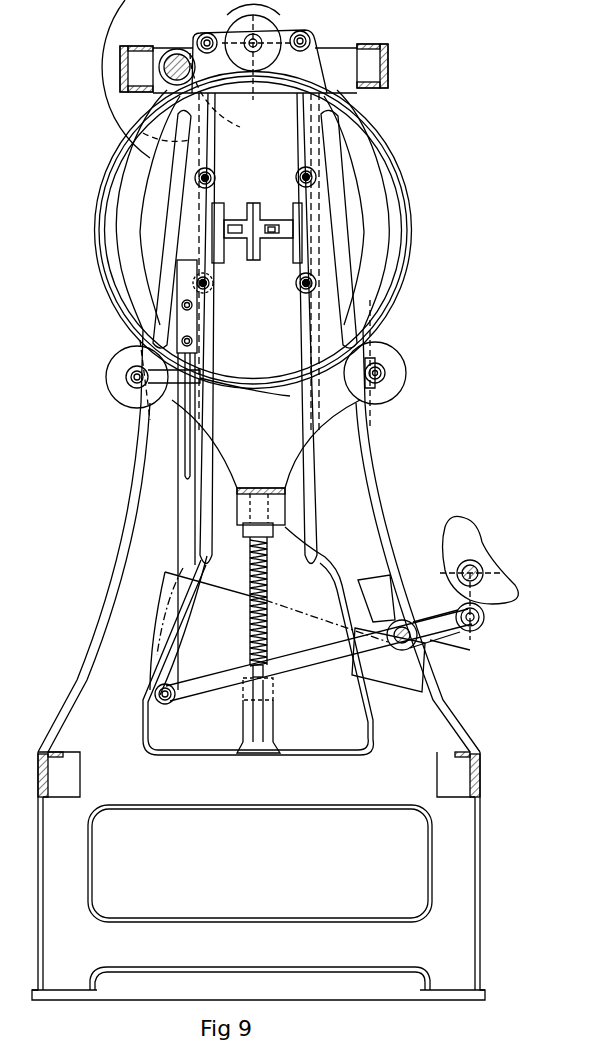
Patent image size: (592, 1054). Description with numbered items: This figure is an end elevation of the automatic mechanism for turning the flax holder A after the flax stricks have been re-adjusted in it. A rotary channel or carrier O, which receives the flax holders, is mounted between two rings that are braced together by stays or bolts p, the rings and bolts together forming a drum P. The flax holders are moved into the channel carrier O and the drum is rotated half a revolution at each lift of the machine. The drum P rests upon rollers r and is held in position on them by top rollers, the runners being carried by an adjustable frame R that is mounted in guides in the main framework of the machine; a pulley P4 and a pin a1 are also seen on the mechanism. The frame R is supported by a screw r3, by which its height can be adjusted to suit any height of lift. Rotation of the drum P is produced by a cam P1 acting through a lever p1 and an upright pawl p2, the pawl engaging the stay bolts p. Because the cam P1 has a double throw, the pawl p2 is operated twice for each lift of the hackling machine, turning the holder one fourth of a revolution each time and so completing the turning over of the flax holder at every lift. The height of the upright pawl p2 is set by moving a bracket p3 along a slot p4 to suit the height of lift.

The drum P is at (100, 232).
The cam P1 is at (334, 605).
The lever p1 is at (228, 676).
The top pulley P4 is at (263, 27).
The adjustable frame R is at (254, 232).
The stay bolts p is at (213, 178).
The channel carrier O is at (224, 218).
The flax holder A is at (258, 224).
The slide pin a1 is at (270, 236).
The bracket p3 is at (197, 318).
The upright pawl p2 is at (183, 450).
The slot p4 is at (187, 472).
The rollers r is at (256, 365).
The screw r3 is at (264, 586).